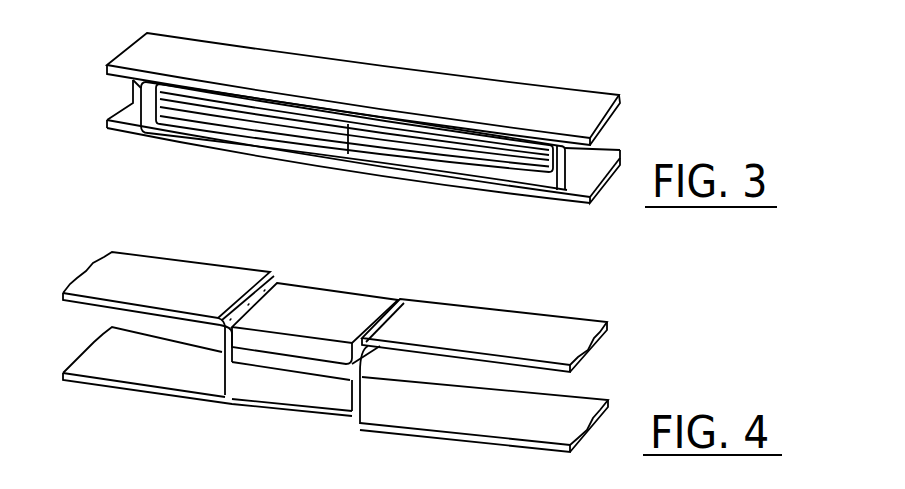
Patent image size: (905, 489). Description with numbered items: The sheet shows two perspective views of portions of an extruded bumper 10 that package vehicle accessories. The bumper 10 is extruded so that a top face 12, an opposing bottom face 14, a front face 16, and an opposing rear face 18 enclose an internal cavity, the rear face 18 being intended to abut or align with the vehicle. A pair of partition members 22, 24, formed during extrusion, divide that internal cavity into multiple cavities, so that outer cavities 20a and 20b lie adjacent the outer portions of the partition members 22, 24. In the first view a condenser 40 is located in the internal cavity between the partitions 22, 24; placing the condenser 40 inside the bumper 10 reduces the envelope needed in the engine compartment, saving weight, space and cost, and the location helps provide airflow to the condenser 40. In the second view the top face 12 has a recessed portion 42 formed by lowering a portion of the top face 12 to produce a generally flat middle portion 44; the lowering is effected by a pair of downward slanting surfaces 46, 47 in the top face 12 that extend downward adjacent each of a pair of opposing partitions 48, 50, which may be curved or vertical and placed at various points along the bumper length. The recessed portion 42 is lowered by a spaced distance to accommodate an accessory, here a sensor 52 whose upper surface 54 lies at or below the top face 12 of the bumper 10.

In FIG. 3, the extruded bumper 10 is at (425, 46).
In FIG. 4, the extruded bumper 10 is at (210, 244).
In FIG. 3, the top face 12 is at (523, 95).
In FIG. 4, the top face 12 is at (507, 313).
In FIG. 3, the bottom face 14 is at (447, 192).
In FIG. 4, the bottom face 14 is at (484, 414).
In FIG. 3, the front face 16 is at (202, 147).
In FIG. 3, the rear face 18 is at (277, 53).
In FIG. 3, the outer cavity 20a is at (118, 89).
In FIG. 3, the outer cavity 20b is at (598, 152).
In FIG. 3, the partition member 22 is at (141, 116).
In FIG. 3, the partition member 24 is at (559, 177).
In FIG. 3, the condenser 40 is at (312, 142).
In FIG. 4, the recessed portion 42 is at (276, 282).
In FIG. 4, the flat middle portion 44 is at (295, 365).
In FIG. 4, the downward slanting surface 46 is at (220, 332).
In FIG. 4, the downward slanting surface 47 is at (418, 302).
In FIG. 4, the opposing partition 48 is at (228, 378).
In FIG. 4, the opposing partition 50 is at (355, 398).
In FIG. 4, the sensor 52 is at (324, 300).
In FIG. 4, the upper surface 54 is at (330, 328).